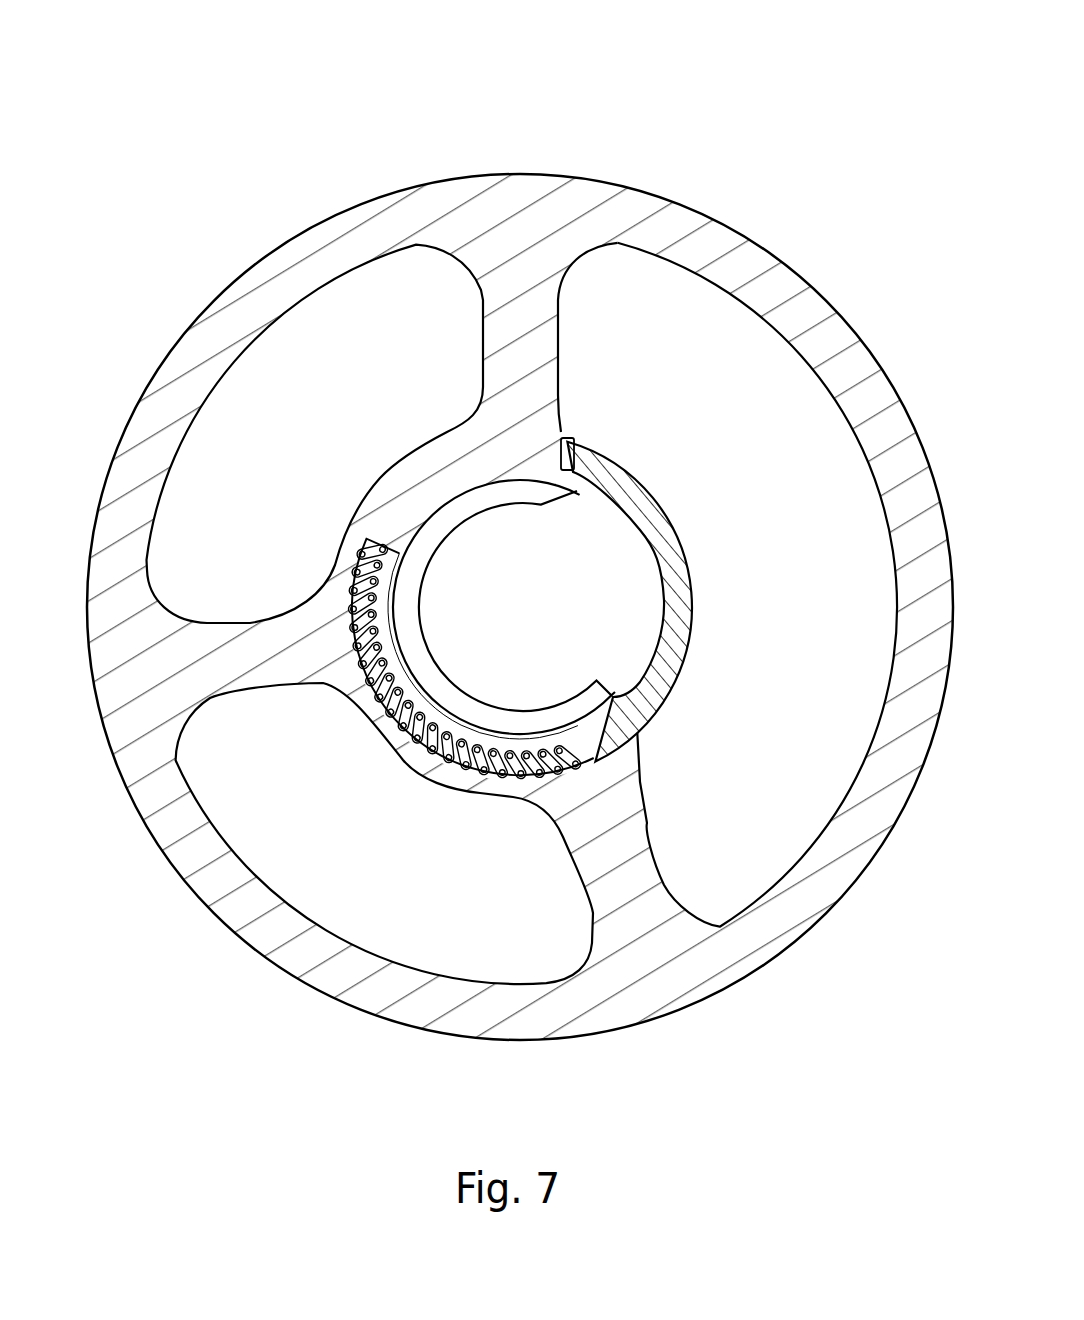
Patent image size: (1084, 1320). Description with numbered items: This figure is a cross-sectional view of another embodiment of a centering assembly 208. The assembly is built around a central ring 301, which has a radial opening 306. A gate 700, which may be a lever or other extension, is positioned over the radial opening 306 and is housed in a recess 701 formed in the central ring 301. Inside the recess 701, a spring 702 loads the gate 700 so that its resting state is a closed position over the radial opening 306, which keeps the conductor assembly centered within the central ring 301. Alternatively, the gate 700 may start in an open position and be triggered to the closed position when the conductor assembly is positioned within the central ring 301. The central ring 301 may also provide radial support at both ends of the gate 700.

The centering assembly 208 is at (165, 95).
The central ring 301 is at (401, 493).
The radial opening 306 is at (628, 635).
The gate 700 is at (638, 500).
The recess 701 is at (512, 790).
The spring 702 is at (417, 728).